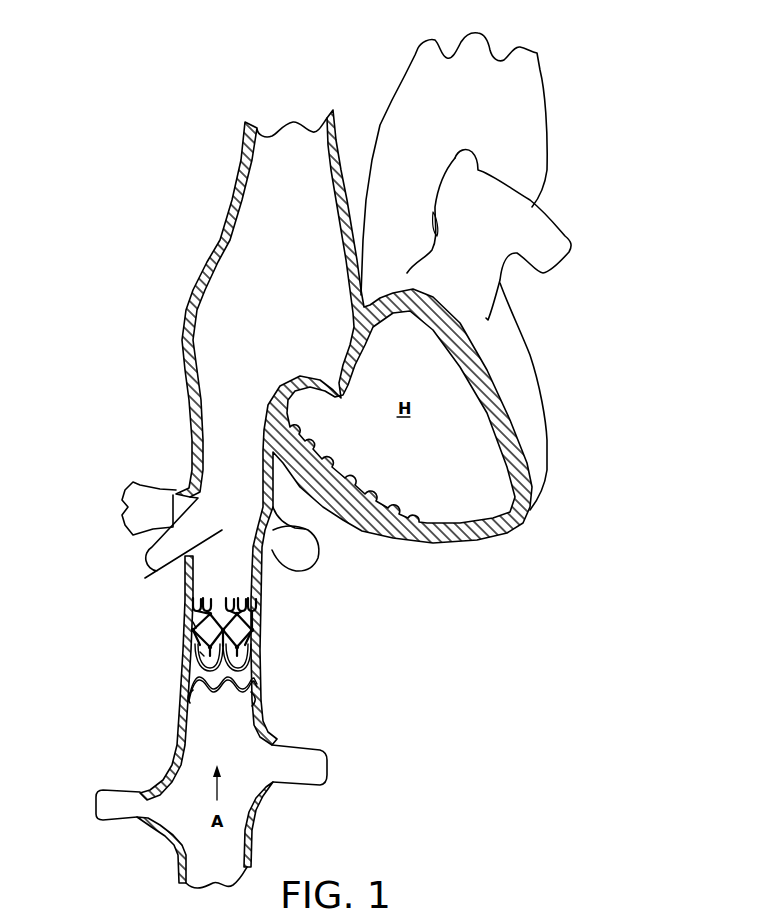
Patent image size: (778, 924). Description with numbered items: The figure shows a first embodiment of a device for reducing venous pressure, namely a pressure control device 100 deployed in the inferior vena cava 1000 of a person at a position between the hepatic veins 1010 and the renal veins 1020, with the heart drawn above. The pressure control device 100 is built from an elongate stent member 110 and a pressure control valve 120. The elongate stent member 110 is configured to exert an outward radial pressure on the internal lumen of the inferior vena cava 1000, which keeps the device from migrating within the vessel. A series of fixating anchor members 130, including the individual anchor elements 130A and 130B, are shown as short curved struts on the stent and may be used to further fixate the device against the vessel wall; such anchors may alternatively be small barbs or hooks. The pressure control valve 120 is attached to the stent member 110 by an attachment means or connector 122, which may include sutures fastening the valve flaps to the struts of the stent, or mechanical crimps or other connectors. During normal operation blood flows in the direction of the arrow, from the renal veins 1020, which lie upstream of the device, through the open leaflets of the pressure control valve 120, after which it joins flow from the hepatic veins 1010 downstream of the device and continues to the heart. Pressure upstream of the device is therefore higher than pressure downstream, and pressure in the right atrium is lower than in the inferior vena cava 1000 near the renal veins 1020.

The pressure control device 100 is at (237, 636).
The elongate stent member 110 is at (213, 617).
The pressure control valve 120 is at (223, 660).
The connector 122 is at (200, 659).
The fixating anchor members 130 is at (218, 648).
The fixating anchor member 130A is at (193, 625).
The fixating anchor member 130B is at (250, 610).
The inferior vena cava 1000 is at (173, 760).
The hepatic veins 1010 is at (150, 484).
The renal veins 1020 is at (307, 743).